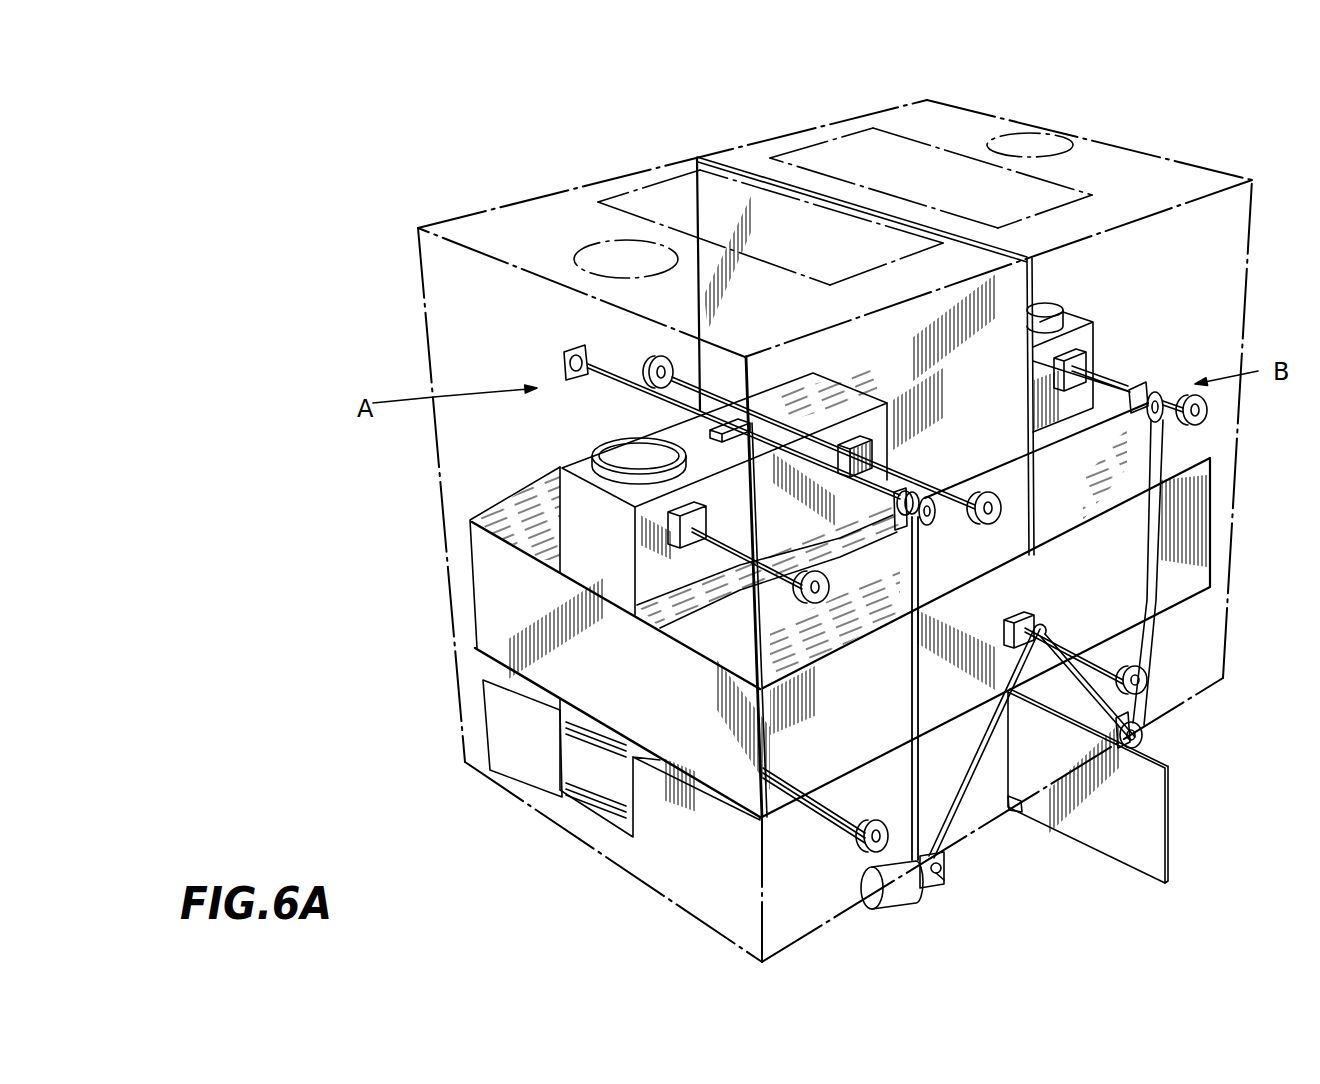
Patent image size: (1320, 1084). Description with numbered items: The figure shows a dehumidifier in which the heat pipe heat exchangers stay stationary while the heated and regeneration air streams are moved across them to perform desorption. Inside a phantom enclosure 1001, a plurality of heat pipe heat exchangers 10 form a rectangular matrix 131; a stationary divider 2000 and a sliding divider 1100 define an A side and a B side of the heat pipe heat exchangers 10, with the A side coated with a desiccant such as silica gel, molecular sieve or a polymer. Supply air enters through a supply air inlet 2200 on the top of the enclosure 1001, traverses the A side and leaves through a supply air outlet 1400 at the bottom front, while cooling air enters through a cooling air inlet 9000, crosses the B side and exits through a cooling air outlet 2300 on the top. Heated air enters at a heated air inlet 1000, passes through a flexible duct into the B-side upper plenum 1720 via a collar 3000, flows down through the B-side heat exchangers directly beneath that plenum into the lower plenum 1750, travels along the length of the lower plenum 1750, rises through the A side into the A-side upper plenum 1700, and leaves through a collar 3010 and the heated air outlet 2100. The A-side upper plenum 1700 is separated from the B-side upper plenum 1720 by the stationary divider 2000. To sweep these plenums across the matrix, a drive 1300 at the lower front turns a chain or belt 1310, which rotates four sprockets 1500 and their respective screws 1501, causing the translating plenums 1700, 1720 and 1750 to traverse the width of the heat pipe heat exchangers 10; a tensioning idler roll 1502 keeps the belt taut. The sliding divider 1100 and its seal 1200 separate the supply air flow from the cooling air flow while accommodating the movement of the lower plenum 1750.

The enclosure 1001 is at (423, 307).
The heated air inlet 1000 is at (1030, 148).
The stationary divider 2000 is at (1007, 283).
The heated air outlet 2100 is at (612, 258).
The supply air inlet 2200 is at (663, 205).
The cooling air outlet 2300 is at (842, 163).
The collar 3000 is at (1040, 313).
The B-side upper plenum 1720 is at (1098, 336).
The screws 1501 is at (1093, 377).
The collar 3010 is at (573, 467).
The A-side upper plenum 1700 is at (550, 566).
The heat pipe heat exchangers 10 is at (1182, 560).
The rectangular matrix 131 is at (1163, 536).
The sprockets 1500 is at (1152, 417).
The chain or belt 1310 is at (1170, 590).
The cooling air inlet 9000 is at (1165, 643).
The tensioning/idler roll 1502 is at (1042, 625).
The lower plenum 1750 is at (572, 797).
The supply air outlet 1400 is at (620, 833).
The sliding divider 1100 is at (1133, 848).
The seal 1200 is at (1013, 810).
The drive 1300 is at (893, 907).